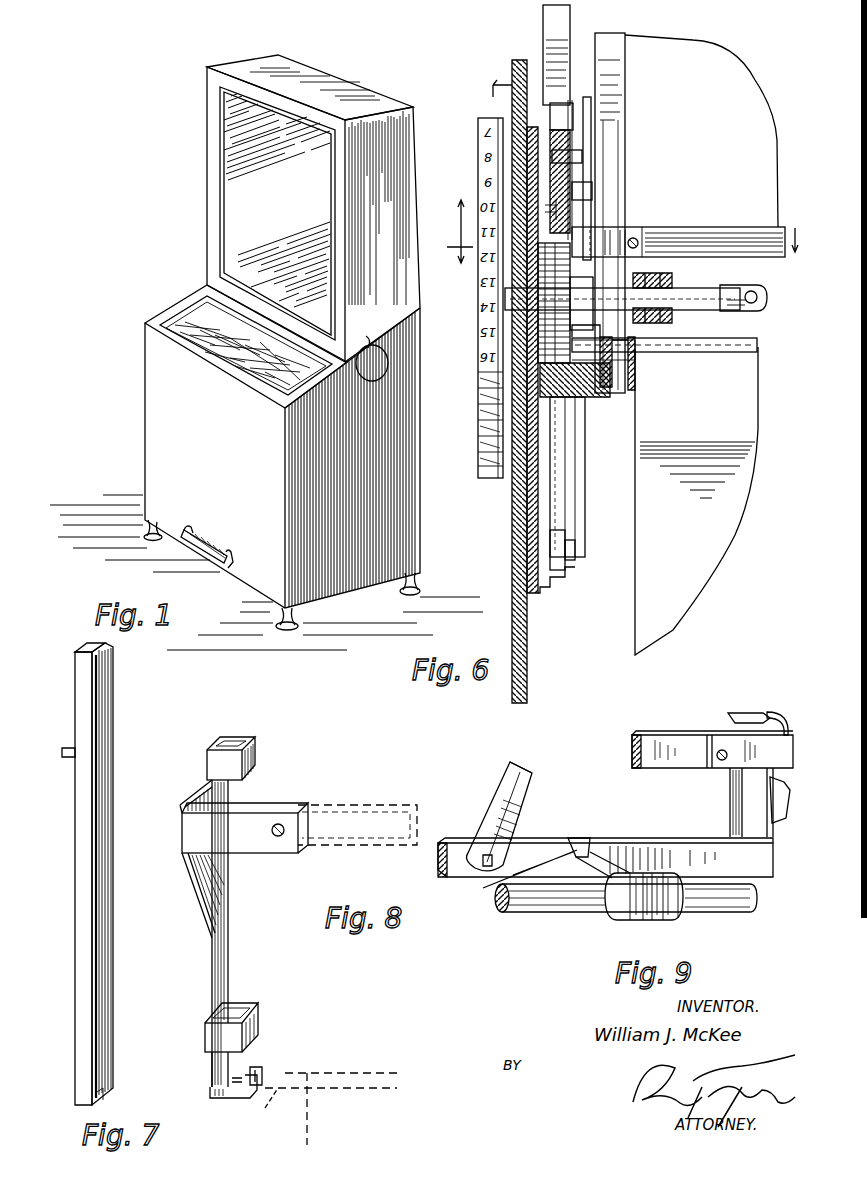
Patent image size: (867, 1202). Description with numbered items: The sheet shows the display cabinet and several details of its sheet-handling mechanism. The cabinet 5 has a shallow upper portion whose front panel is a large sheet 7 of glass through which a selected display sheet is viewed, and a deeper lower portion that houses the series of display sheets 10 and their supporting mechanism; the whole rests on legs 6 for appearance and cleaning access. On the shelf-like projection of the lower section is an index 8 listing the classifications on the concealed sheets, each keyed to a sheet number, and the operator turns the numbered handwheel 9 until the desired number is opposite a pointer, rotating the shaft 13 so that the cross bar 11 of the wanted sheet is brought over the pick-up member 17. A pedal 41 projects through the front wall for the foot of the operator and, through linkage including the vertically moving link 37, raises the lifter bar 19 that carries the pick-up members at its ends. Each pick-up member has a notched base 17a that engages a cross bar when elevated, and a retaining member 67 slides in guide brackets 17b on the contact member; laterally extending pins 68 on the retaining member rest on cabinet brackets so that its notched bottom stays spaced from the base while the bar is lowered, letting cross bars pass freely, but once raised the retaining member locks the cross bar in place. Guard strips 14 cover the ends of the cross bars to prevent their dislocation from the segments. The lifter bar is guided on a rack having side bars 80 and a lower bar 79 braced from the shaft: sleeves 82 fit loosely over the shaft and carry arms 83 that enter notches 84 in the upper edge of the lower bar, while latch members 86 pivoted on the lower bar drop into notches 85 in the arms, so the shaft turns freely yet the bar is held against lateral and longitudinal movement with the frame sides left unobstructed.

In FIG. 1, the cabinet 5 is at (405, 530).
In FIG. 1, the legs 6 is at (315, 622).
In FIG. 1, the sheet of glass 7 is at (232, 190).
In FIG. 1, the index 8 is at (145, 321).
In FIG. 1, the handwheel 9 is at (388, 366).
In FIG. 1, the pedal 41 is at (216, 565).
In FIG. 6, the display sheets 10 is at (715, 537).
In FIG. 8, the display sheets 10 is at (303, 1127).
In FIG. 6, the cross bars 11 is at (605, 385).
In FIG. 8, the cross bars 11 is at (276, 1107).
In FIG. 6, the shaft 13 is at (722, 312).
In FIG. 9, the shaft 13 is at (530, 916).
In FIG. 6, the guard strips 14 is at (626, 231).
In FIG. 6, the pick-up member 17 is at (570, 397).
In FIG. 8, the pick-up member 17 is at (225, 960).
In FIG. 8, the notched base 17a is at (262, 1067).
In FIG. 6, the guide brackets 17b is at (585, 190).
In FIG. 8, the guide brackets 17b is at (253, 1017).
In FIG. 6, the lifter bar 19 is at (752, 232).
In FIG. 8, the lifter bar 19 is at (408, 803).
In FIG. 6, the link 37 is at (560, 25).
In FIG. 7, the retaining members 67 is at (102, 912).
In FIG. 7, the pins 68 is at (64, 748).
In FIG. 6, the lower bar 79 is at (768, 290).
In FIG. 9, the lower bar 79 is at (530, 858).
In FIG. 6, the side bars 80 is at (630, 100).
In FIG. 9, the sleeves 82 is at (680, 915).
In FIG. 9, the arms 83 is at (612, 850).
In FIG. 9, the notches 84 is at (514, 881).
In FIG. 9, the notches 85 is at (588, 840).
In FIG. 6, the latch members 86 is at (675, 280).
In FIG. 9, the latch members 86 is at (520, 793).